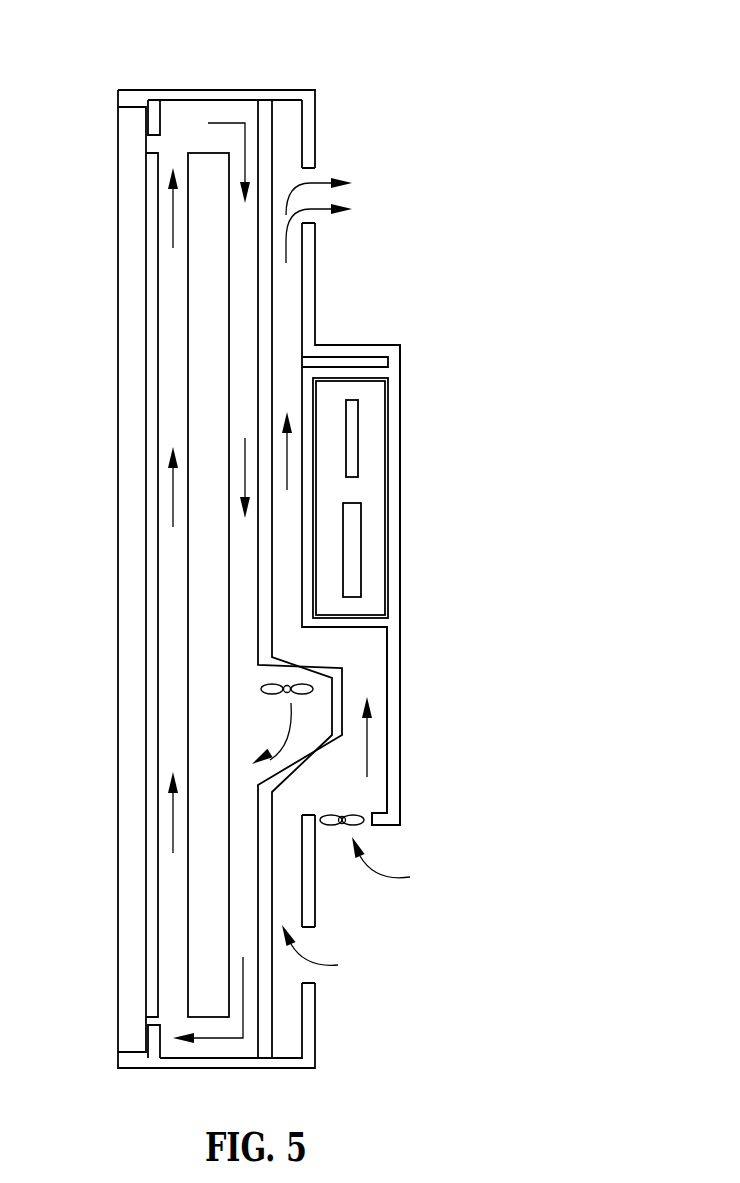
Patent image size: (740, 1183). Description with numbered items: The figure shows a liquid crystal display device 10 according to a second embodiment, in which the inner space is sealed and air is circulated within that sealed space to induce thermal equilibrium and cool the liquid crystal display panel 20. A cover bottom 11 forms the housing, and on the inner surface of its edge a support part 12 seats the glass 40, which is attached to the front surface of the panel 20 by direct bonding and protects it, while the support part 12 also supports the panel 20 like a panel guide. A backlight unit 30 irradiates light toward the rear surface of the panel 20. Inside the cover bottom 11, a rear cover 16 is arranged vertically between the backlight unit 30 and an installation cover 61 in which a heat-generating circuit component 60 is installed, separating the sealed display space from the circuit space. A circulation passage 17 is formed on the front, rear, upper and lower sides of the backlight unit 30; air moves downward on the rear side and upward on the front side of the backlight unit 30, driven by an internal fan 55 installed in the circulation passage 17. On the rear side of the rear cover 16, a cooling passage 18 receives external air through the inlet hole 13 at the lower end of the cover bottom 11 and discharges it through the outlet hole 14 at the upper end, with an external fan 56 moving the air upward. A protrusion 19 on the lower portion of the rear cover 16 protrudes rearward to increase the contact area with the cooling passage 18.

The liquid crystal display device 10 is at (394, 39).
The cover bottom 11 is at (308, 123).
The support part 12 is at (152, 120).
The inlet hole 13 is at (307, 942).
The outlet hole 14 is at (308, 195).
The rear cover 16 is at (265, 295).
The circulation passage 17 is at (174, 645).
The cooling passage 18 is at (358, 637).
The protrusion 19 is at (338, 722).
The liquid crystal display panel 20 is at (150, 390).
The backlight unit 30 is at (200, 318).
The glass 40 is at (135, 535).
The internal fan 55 is at (302, 690).
The external fan 56 is at (357, 822).
The circuit component 60 is at (352, 427).
The installation cover 61 is at (308, 490).